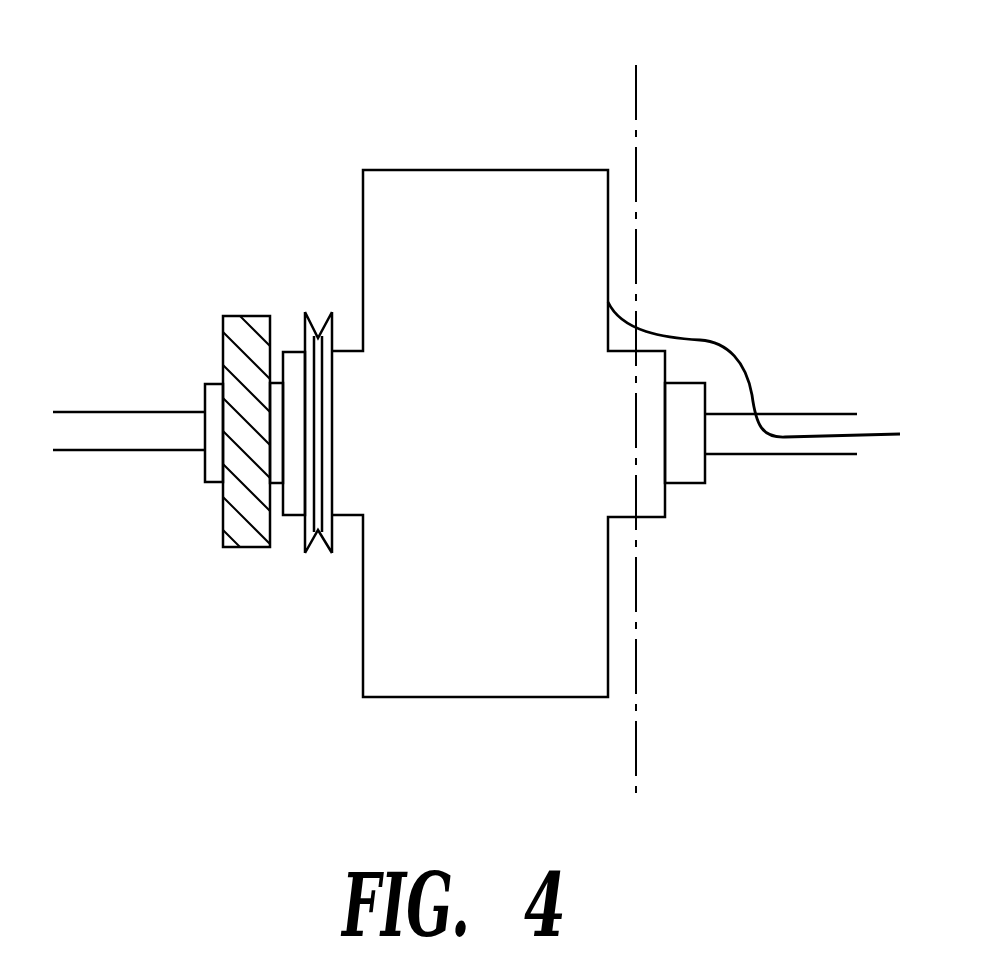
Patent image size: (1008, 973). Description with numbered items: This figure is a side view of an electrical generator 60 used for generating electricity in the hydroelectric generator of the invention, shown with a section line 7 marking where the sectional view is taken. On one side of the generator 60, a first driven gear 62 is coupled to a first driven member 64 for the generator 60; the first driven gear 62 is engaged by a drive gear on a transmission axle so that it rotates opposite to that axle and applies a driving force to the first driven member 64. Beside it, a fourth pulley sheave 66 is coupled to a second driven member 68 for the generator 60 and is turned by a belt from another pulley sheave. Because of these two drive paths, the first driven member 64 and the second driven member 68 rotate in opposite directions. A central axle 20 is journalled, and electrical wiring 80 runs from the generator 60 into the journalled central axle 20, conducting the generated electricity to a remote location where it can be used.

The section line 7- 7 is at (656, 431).
The central axle 20 is at (127, 452).
The first generator 60 is at (487, 170).
The first driven gear 62 is at (235, 314).
The first driven member 64 is at (212, 382).
The fourth pulley sheave 66 is at (318, 311).
The second driven member 68 is at (286, 352).
The electrical wiring 80 is at (722, 342).